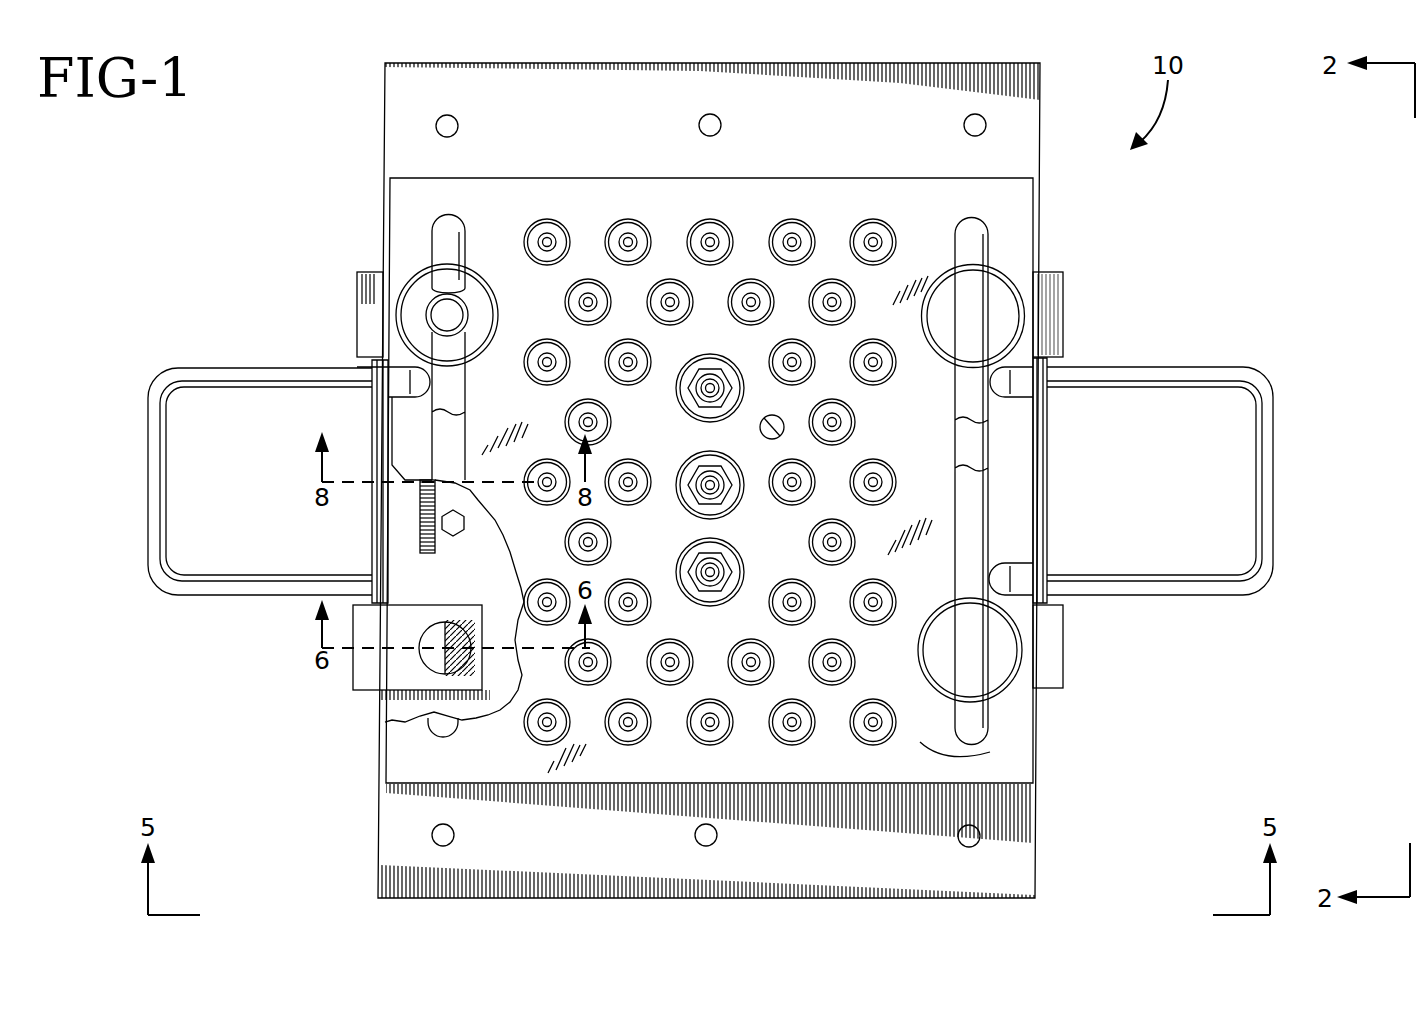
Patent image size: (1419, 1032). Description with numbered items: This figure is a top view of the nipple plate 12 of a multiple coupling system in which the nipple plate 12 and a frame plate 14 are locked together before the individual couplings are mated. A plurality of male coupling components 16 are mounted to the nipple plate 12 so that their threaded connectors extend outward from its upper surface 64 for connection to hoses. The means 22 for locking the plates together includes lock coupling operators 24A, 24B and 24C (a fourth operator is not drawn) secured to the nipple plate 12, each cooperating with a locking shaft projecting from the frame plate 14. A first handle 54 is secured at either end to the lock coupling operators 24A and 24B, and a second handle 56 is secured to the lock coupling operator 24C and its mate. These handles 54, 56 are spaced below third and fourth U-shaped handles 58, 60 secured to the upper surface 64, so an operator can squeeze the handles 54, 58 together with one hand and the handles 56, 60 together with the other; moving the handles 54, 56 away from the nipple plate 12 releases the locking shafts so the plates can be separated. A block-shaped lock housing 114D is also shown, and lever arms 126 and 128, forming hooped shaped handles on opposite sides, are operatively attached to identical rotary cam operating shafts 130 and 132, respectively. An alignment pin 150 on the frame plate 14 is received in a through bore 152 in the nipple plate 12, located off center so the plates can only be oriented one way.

The nipple plate 12 is at (588, 200).
The frame plate 14 is at (412, 95).
The male coupling components 16 is at (862, 218).
The means for locking 22 is at (488, 240).
The lock coupling operator 24A is at (1010, 645).
The lock coupling operator 24B is at (1000, 280).
The lock coupling operator 24C is at (410, 305).
The first handle 54 is at (975, 437).
The second handle 56 is at (445, 350).
The third U-shaped handle 58 is at (973, 725).
The fourth U-shaped handle 60 is at (440, 240).
The upper surface 64 is at (990, 752).
The lock housing 114D is at (375, 683).
The lever arm 126 is at (1265, 470).
The lever arm 128 is at (160, 452).
The rotary cam operating shaft 130 is at (1040, 505).
The rotary cam operating shaft 132 is at (385, 540).
The alignment pin 150 is at (770, 440).
The through bore 152 is at (760, 428).